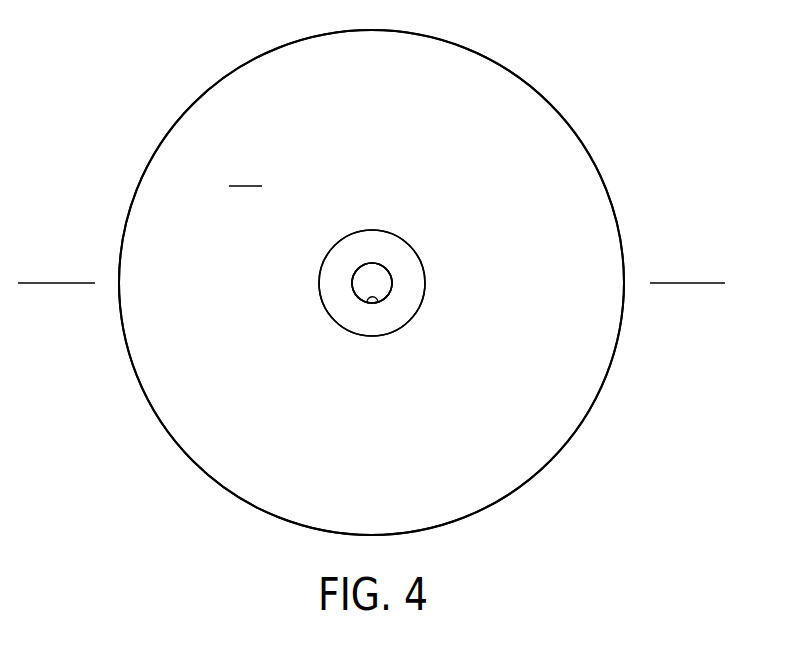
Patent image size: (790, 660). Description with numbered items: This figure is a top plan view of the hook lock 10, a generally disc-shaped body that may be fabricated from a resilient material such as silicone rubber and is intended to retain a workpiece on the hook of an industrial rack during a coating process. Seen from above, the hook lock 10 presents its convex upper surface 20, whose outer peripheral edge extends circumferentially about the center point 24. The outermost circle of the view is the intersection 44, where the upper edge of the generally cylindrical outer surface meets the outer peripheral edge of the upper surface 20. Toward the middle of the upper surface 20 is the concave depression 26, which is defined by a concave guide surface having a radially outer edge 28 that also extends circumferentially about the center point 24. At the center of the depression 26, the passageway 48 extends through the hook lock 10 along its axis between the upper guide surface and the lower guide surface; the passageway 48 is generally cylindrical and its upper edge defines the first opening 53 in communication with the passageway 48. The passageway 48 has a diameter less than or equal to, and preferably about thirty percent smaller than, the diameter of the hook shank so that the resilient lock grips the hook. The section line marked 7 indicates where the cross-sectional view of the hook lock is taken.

The hook lock 10 is at (137, 386).
The intersection 44 is at (548, 103).
The upper surface 20 is at (245, 172).
The radially outer edge 28 is at (425, 279).
The concave depression 26 is at (333, 270).
The center point 24 is at (372, 282).
The passageway 48 is at (354, 295).
The first opening 53 is at (376, 300).
The section line 7- 7 is at (57, 286).